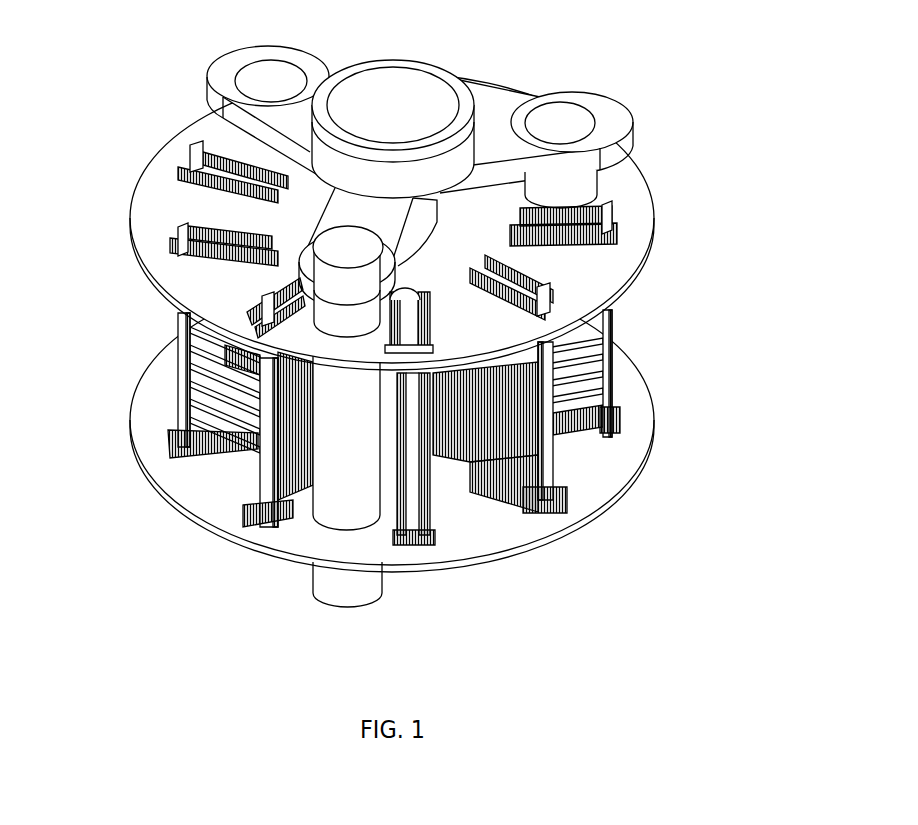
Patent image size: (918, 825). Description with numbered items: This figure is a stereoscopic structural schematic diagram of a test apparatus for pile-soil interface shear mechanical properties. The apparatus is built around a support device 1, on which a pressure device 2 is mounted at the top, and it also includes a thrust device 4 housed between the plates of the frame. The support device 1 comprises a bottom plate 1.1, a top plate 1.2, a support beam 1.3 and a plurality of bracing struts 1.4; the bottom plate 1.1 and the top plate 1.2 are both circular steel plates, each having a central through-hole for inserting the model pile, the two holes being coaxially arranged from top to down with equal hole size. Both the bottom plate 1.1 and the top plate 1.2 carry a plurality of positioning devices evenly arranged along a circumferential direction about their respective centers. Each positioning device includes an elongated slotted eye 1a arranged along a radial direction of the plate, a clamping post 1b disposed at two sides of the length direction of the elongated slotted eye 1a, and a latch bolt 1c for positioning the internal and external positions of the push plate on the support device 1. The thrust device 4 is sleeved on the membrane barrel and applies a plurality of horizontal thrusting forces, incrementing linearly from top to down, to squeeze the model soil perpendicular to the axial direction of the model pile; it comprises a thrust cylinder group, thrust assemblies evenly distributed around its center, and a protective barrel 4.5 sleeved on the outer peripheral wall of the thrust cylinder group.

The support device 1 is at (402, 359).
The bottom plate 1.1 is at (595, 473).
The top plate 1.2 is at (633, 247).
The support beam 1.3 is at (620, 122).
The bracing strut 1.4 is at (357, 497).
The elongated slotted eye 1a is at (203, 179).
The clamping post 1b is at (205, 170).
The latch bolt 1c is at (177, 252).
The pressure device 2 is at (415, 92).
The thrust device 4 is at (527, 403).
The protective barrel 4.5 is at (427, 447).